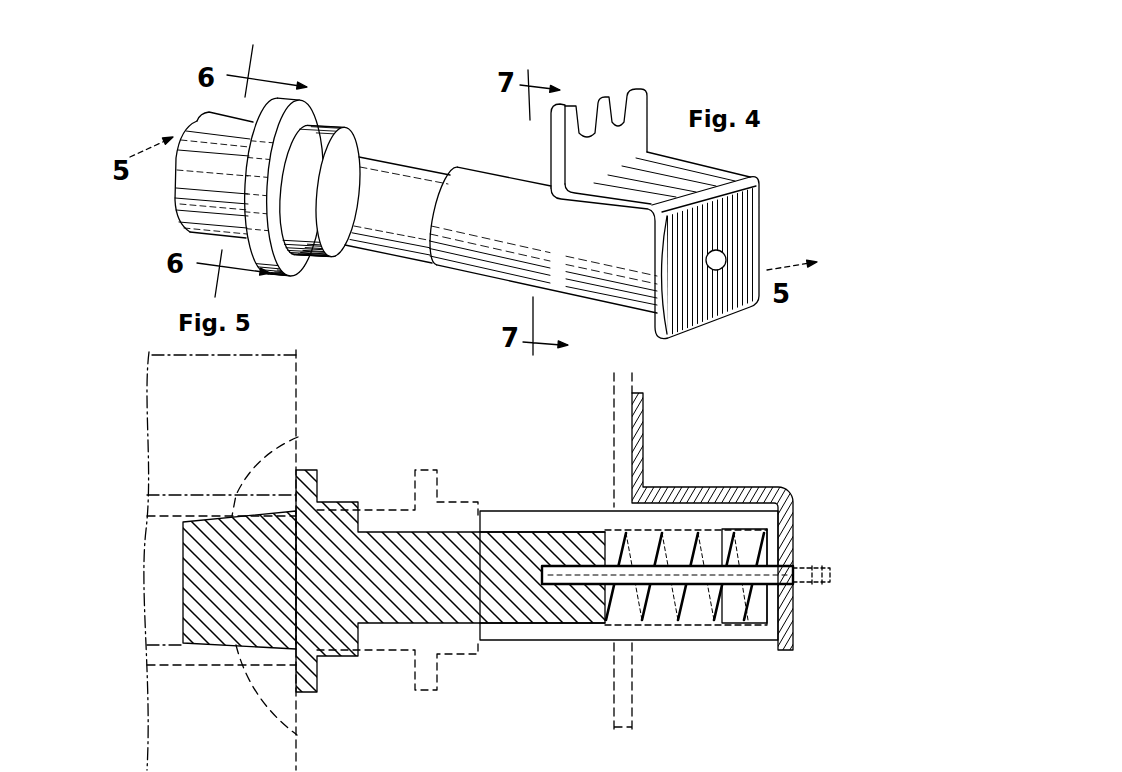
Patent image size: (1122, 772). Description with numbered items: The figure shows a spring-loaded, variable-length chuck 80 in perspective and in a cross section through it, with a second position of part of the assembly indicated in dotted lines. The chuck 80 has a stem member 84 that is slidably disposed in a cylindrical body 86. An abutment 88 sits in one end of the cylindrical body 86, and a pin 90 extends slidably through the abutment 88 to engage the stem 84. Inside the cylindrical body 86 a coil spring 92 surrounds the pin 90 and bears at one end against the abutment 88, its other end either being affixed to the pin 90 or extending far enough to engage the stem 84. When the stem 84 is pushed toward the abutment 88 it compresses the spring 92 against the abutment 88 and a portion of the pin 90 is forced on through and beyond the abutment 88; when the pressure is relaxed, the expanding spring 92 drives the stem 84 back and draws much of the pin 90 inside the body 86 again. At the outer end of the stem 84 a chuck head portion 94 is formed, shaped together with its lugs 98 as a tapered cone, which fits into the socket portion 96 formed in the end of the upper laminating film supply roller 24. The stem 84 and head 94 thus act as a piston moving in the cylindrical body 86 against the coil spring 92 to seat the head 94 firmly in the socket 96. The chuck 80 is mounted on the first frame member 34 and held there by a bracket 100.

In FIG. 5, the upper laminating film supply roller 24 is at (272, 400).
In FIG. 5, the first frame member 34 is at (622, 710).
In FIG. 4, the chuck 80 is at (150, 223).
In FIG. 4, the stem member 84 is at (400, 184).
In FIG. 5, the stem member 84 is at (443, 600).
In FIG. 4, the cylindrical body 86 is at (503, 270).
In FIG. 5, the cylindrical body 86 is at (552, 525).
In FIG. 5, the abutment 88 is at (770, 547).
In FIG. 5, the pin 90 is at (663, 603).
In FIG. 5, the coil spring 92 is at (723, 553).
In FIG. 5, the chuck head portion 94 is at (197, 588).
In FIG. 5, the socket portion 96 is at (308, 429).
In FIG. 4, the lugs 98 is at (285, 106).
In FIG. 4, the bracket 100 is at (707, 182).
In FIG. 5, the bracket 100 is at (700, 490).